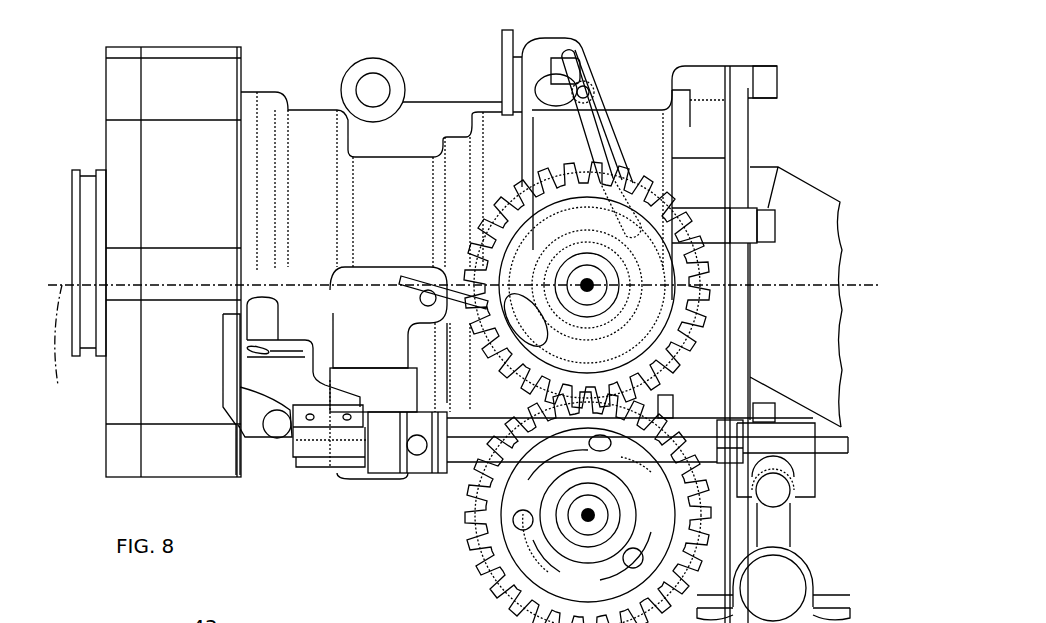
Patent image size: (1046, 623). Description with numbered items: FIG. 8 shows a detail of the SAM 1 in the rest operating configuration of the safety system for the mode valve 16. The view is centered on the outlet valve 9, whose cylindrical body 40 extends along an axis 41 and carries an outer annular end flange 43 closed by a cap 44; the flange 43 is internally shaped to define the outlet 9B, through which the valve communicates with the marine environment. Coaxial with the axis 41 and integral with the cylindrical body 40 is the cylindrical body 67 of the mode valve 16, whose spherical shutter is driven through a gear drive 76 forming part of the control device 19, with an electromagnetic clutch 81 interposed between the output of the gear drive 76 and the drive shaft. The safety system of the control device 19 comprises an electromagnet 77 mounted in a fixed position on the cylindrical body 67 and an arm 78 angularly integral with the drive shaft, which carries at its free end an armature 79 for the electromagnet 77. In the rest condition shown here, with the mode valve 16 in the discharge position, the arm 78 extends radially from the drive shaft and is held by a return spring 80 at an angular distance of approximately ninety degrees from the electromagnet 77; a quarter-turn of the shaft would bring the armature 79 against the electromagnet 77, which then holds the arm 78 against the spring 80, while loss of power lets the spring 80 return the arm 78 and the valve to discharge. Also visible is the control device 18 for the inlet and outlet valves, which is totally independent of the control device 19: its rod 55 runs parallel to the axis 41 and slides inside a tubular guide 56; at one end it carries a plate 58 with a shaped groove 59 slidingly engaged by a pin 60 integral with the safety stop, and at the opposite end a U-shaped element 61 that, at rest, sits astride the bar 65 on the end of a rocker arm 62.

The SAM 1 is at (806, 72).
The outlet valve 9 is at (397, 153).
The outlet 9B is at (70, 197).
The mode valve 16 is at (625, 110).
The control device 18 is at (806, 511).
The control device 19 is at (638, 152).
The cylindrical body 40 is at (387, 217).
The axis 41 is at (69, 348).
The outer annular end flange 43 is at (170, 72).
The cap 44 is at (122, 105).
The rod 55 is at (700, 440).
The tubular guide 56 is at (462, 460).
The plate 58 is at (278, 383).
The shaped groove 59 is at (297, 347).
The pin 60 is at (268, 352).
The U-shaped element 61 is at (805, 455).
The rocker arm 62 is at (816, 564).
The bar 65 is at (767, 490).
The cylindrical body 67 is at (660, 153).
The gear drive 76 is at (699, 350).
The electromagnet 77 is at (368, 380).
The arm 78 is at (545, 45).
The armature 79 is at (503, 65).
The return spring 80 is at (412, 276).
The electromagnetic clutch 81 is at (693, 273).